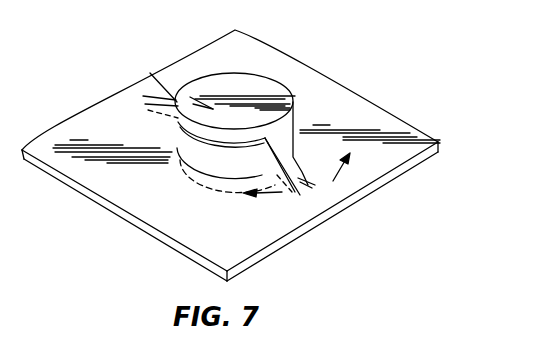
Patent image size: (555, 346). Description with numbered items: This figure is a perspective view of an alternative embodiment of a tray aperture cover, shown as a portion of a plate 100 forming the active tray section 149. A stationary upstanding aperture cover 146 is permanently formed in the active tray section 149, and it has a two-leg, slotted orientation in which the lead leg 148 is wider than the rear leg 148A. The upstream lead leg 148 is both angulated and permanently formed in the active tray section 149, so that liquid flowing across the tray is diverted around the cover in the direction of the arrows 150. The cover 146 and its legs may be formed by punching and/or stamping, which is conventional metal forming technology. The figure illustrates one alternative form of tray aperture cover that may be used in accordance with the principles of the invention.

The plate 100 is at (271, 43).
The stationary upstanding aperture cover 146 is at (283, 85).
The lead leg 148 is at (295, 168).
The rear leg 148A is at (157, 93).
The active tray section 149 is at (393, 156).
The arrows 150 is at (333, 181).